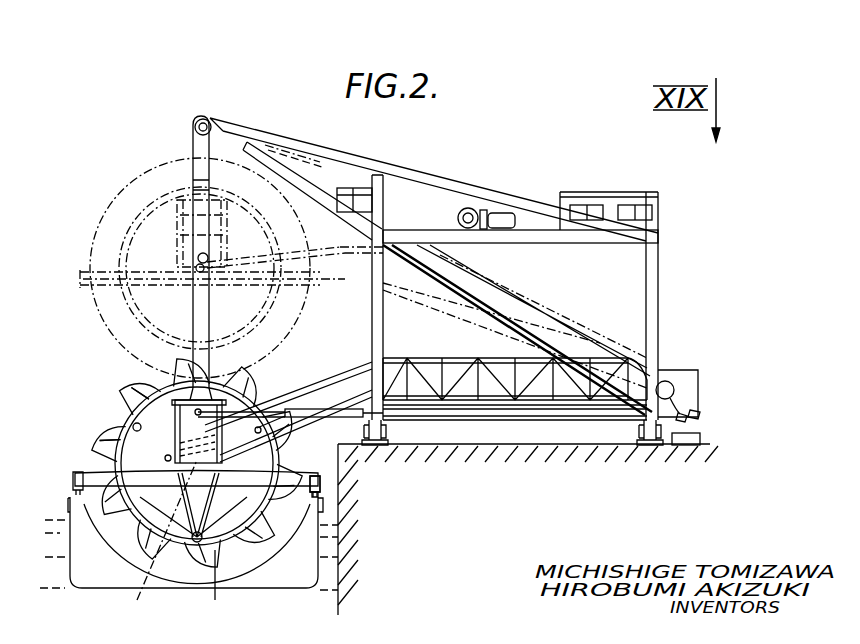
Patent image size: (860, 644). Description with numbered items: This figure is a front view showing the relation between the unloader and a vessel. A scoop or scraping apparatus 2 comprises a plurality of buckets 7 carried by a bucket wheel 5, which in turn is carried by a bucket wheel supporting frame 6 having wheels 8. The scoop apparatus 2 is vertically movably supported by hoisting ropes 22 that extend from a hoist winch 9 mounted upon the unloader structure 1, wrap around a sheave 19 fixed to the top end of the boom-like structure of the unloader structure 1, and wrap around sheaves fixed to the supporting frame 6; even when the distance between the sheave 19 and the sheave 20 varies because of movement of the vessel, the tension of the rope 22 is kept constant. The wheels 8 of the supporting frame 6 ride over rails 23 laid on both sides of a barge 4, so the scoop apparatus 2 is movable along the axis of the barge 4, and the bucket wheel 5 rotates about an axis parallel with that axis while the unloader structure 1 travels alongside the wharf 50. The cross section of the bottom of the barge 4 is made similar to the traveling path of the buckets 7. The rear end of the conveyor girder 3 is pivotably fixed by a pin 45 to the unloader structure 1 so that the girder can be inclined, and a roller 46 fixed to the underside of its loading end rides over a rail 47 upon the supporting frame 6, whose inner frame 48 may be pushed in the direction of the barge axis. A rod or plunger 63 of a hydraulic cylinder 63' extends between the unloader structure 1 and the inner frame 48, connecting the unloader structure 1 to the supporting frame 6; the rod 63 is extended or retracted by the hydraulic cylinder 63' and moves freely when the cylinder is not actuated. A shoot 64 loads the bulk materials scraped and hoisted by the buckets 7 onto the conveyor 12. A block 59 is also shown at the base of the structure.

The unloader structure 1 is at (660, 267).
The scoop or scraping apparatus 2 is at (104, 462).
The conveyor girder 3 is at (390, 358).
The barge 4 is at (102, 578).
The bucket wheel 5 is at (140, 405).
The bucket wheel supporting frame 6 is at (87, 477).
The buckets 7 is at (112, 418).
The wheels 8 is at (320, 488).
The hoist winch 9 is at (480, 207).
The conveyor 12 is at (505, 378).
The sheave 19 is at (196, 122).
The sheave 20 is at (178, 347).
The hoisting ropes 22 is at (192, 152).
The rails 23 is at (318, 495).
The pin 45 is at (670, 400).
The roller 46 is at (152, 543).
The rail 47 is at (221, 589).
The inner frame 48 is at (272, 372).
The wharf 50 is at (445, 470).
The block 59 is at (700, 428).
The rod or plunger 63 is at (290, 393).
The hydraulic cylinder 63' is at (294, 383).
The shoot 64 is at (130, 377).